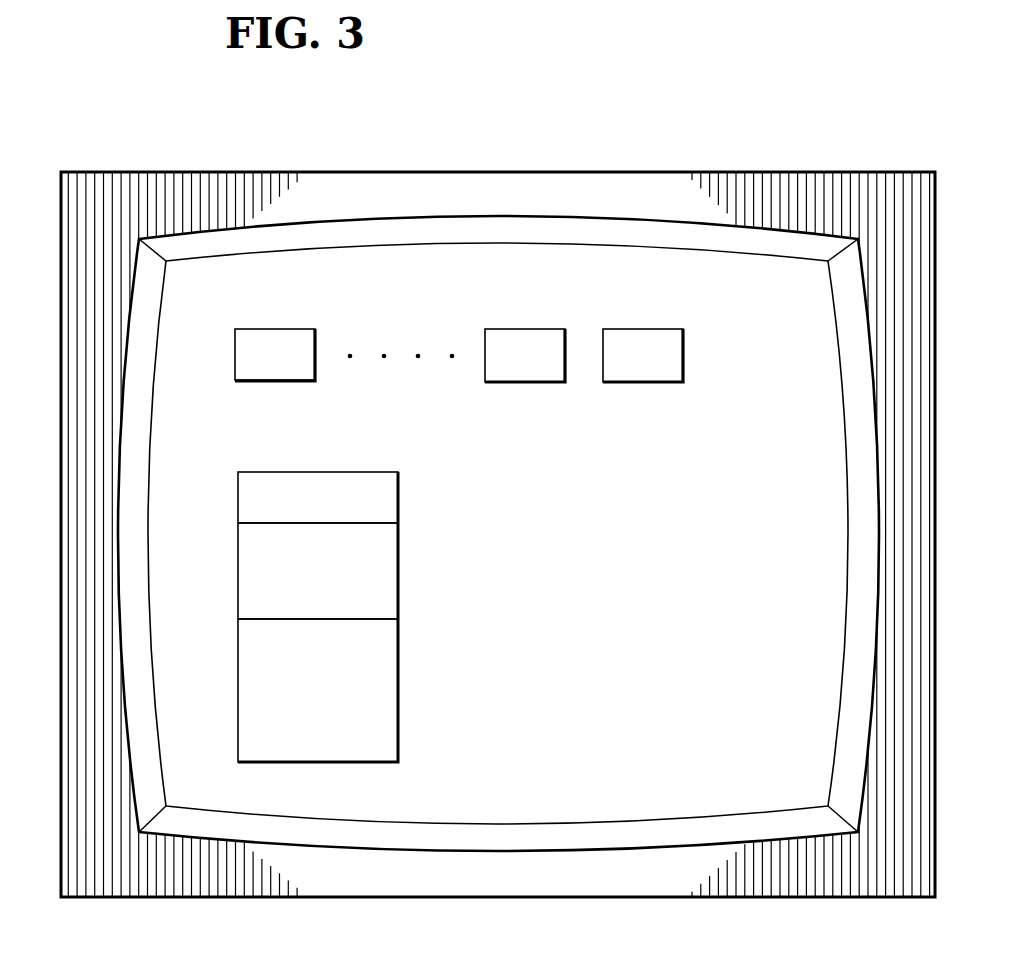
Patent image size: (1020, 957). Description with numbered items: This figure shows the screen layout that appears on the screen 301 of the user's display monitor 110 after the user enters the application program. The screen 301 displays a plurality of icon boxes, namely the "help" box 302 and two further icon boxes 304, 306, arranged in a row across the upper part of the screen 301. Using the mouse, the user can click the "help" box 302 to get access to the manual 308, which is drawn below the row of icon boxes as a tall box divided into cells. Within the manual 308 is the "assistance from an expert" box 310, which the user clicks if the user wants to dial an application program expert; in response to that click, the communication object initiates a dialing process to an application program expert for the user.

The display monitor 110 is at (612, 172).
The screen 301 is at (440, 793).
The help box 302 is at (287, 329).
The icon box 304 is at (528, 329).
The icon box 306 is at (645, 329).
The manual 308 is at (398, 502).
The assistance from an expert box 310 is at (398, 573).